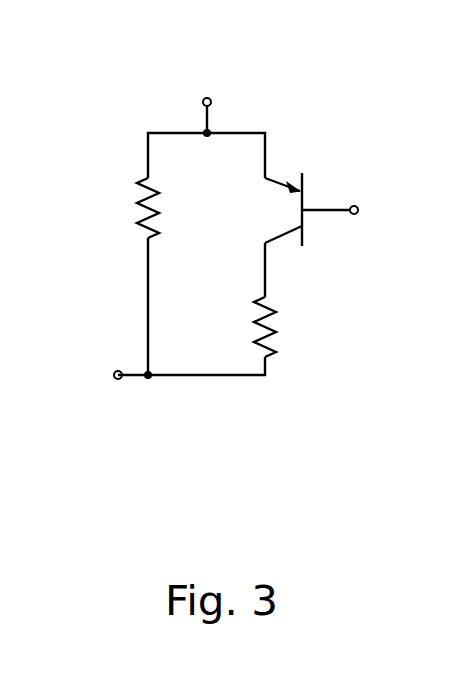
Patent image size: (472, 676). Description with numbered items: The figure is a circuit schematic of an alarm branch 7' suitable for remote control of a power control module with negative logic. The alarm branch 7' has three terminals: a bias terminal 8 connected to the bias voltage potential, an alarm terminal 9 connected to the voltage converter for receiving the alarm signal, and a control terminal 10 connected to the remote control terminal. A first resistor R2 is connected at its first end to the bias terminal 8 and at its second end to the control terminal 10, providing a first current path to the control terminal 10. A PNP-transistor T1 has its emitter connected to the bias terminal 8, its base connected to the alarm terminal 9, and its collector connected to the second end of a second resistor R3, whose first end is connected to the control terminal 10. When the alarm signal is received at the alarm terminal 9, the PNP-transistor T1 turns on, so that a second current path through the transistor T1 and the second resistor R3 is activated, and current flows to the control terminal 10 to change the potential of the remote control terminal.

The alarm branch 7' is at (228, 202).
The bias terminal 8 is at (202, 103).
The alarm terminal 9 is at (358, 210).
The control terminal 10 is at (114, 375).
The first resistor R2 is at (163, 208).
The second resistor R3 is at (283, 327).
The PNP-transistor T1 is at (307, 209).